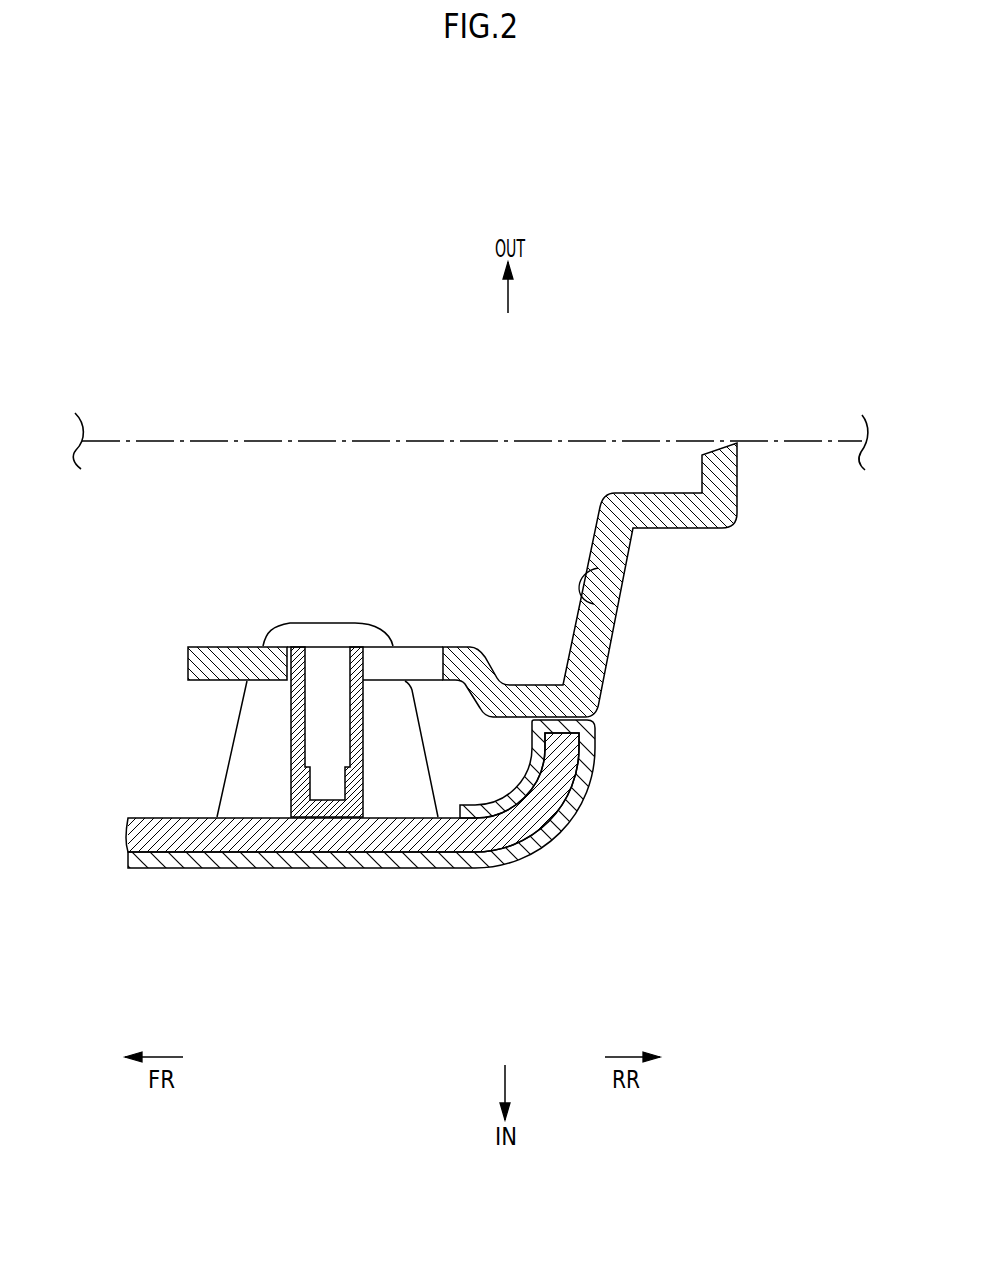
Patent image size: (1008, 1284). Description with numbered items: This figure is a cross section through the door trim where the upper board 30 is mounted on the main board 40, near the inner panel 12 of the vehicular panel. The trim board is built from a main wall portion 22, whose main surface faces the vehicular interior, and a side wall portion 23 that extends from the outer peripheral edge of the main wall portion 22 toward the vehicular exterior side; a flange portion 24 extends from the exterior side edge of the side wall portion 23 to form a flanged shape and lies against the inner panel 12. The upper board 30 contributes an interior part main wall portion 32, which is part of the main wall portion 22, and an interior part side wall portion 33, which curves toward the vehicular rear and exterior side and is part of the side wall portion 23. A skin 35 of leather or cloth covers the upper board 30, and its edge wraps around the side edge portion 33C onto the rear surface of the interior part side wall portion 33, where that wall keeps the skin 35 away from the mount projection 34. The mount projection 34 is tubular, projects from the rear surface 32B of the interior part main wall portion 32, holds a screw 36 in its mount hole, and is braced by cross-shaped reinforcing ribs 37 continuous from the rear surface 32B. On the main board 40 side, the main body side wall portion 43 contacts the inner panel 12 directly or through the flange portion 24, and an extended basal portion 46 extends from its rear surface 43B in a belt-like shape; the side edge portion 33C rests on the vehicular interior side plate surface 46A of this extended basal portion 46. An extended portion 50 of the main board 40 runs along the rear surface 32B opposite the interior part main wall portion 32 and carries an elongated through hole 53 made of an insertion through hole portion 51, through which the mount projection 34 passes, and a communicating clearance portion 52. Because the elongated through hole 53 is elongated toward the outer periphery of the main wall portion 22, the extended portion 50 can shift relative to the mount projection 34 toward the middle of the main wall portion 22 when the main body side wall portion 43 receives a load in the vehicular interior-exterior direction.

The inner panel 12 is at (123, 439).
The main wall portion 22 is at (360, 853).
The side wall portion 23 is at (464, 663).
The flange portion 24 is at (667, 502).
The upper board 30 is at (550, 868).
The interior part main wall portion 32 is at (218, 817).
The rear surface 32B is at (182, 817).
The interior part side wall portion 33 is at (560, 783).
The side edge portion 33C is at (568, 713).
The mount projection 34 is at (300, 737).
The skin 35 is at (480, 862).
The screw 36 is at (327, 713).
The reinforcing ribs 37 is at (394, 793).
The main board 40 is at (482, 628).
The main body side wall portion 43 is at (623, 557).
The rear surface 43B is at (593, 603).
The extended basal portion 46 is at (523, 688).
The vehicular interior side plate surface 46A is at (510, 720).
The extended portion 50 is at (220, 646).
The insertion through hole portion 51 is at (328, 684).
The clearance portion 52 is at (443, 667).
The elongated through hole 53 is at (373, 396).